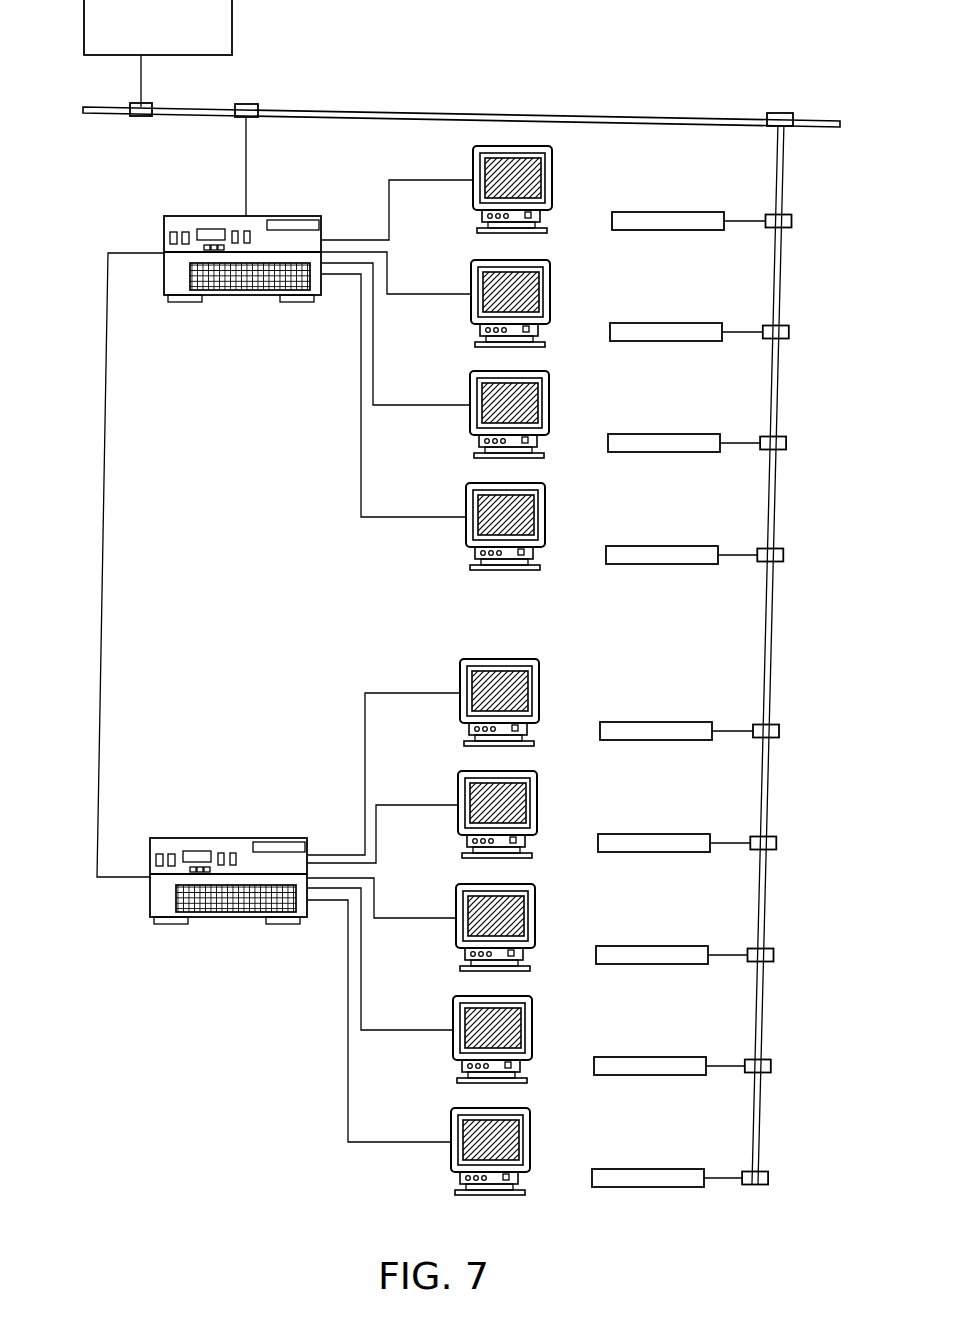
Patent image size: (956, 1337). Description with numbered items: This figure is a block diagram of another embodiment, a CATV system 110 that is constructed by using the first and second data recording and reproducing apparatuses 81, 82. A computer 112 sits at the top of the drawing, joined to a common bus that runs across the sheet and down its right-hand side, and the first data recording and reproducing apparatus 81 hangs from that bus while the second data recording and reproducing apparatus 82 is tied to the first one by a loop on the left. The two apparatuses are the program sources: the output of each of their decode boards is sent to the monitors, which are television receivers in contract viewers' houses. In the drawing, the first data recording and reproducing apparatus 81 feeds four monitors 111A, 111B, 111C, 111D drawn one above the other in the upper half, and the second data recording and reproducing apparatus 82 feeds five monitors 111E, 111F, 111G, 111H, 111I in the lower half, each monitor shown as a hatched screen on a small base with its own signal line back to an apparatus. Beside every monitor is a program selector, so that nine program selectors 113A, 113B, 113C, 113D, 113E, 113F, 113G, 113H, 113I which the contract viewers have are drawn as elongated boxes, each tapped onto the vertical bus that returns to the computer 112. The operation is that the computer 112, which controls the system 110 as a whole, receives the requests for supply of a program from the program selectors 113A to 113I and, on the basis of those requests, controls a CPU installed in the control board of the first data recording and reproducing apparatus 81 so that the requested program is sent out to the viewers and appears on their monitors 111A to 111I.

The computer 112 is at (233, 22).
The CATV system 110 is at (807, 51).
The first data recording and reproducing apparatus 81 is at (300, 198).
The second data recording and reproducing apparatus 82 is at (288, 820).
The monitor 111A is at (585, 160).
The monitor 111B is at (583, 274).
The monitor 111C is at (582, 385).
The monitor 111D is at (578, 497).
The monitor 111E is at (572, 673).
The monitor 111F is at (570, 785).
The monitor 111G is at (568, 898).
The monitor 111H is at (533, 1020).
The monitor 111I is at (531, 1132).
The program selector 113A is at (706, 186).
The program selector 113B is at (704, 297).
The program selector 113C is at (702, 408).
The program selector 113D is at (700, 520).
The program selector 113E is at (694, 696).
The program selector 113F is at (692, 808).
The program selector 113G is at (690, 920).
The program selector 113H is at (688, 1031).
The program selector 113I is at (686, 1143).